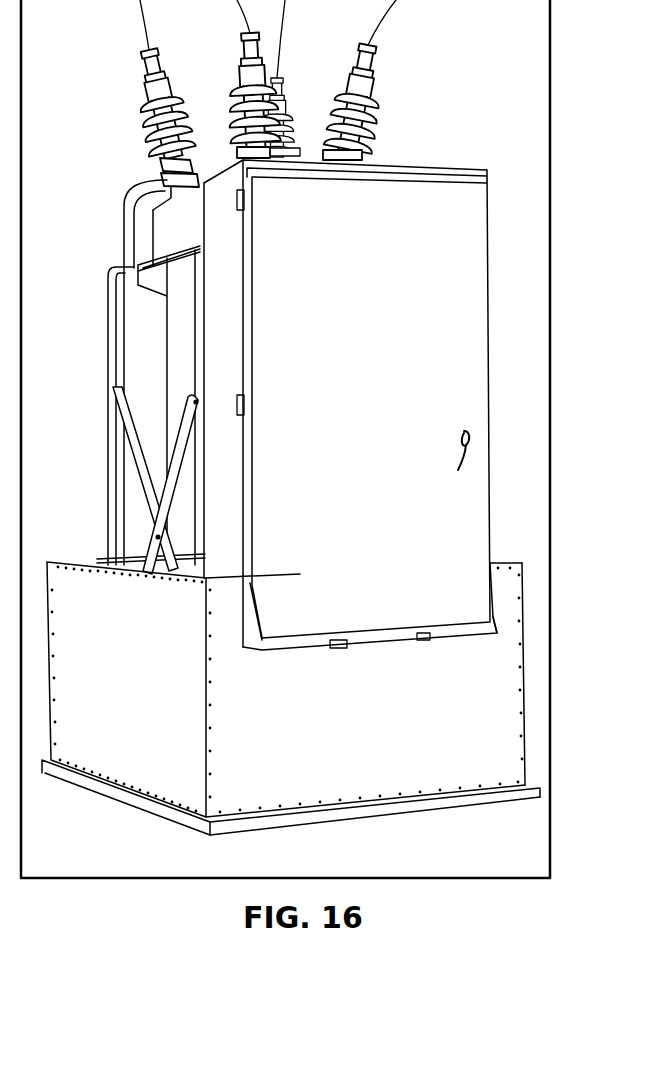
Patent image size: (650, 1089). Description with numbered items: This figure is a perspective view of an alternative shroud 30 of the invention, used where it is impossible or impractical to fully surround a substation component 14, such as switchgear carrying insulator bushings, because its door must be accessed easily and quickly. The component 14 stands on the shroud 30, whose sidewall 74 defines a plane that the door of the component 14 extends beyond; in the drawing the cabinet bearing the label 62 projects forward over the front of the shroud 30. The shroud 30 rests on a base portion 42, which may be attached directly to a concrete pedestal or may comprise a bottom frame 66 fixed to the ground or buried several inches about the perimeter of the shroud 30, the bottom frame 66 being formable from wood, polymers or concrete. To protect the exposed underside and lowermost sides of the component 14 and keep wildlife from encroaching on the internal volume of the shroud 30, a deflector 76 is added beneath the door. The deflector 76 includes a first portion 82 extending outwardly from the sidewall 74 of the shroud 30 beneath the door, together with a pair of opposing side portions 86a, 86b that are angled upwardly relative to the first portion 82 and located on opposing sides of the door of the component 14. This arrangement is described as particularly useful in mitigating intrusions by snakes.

The substation component 14 is at (373, 117).
The cabinet enclosure 62 is at (385, 378).
The sidewall 74 is at (385, 728).
The shroud 30 is at (523, 627).
The base portion 42 is at (541, 788).
The bottom frame 66 is at (425, 808).
The deflector 76 is at (285, 651).
The first portion 82 is at (453, 635).
The side portion 86a is at (247, 630).
The side portion 86b is at (495, 614).